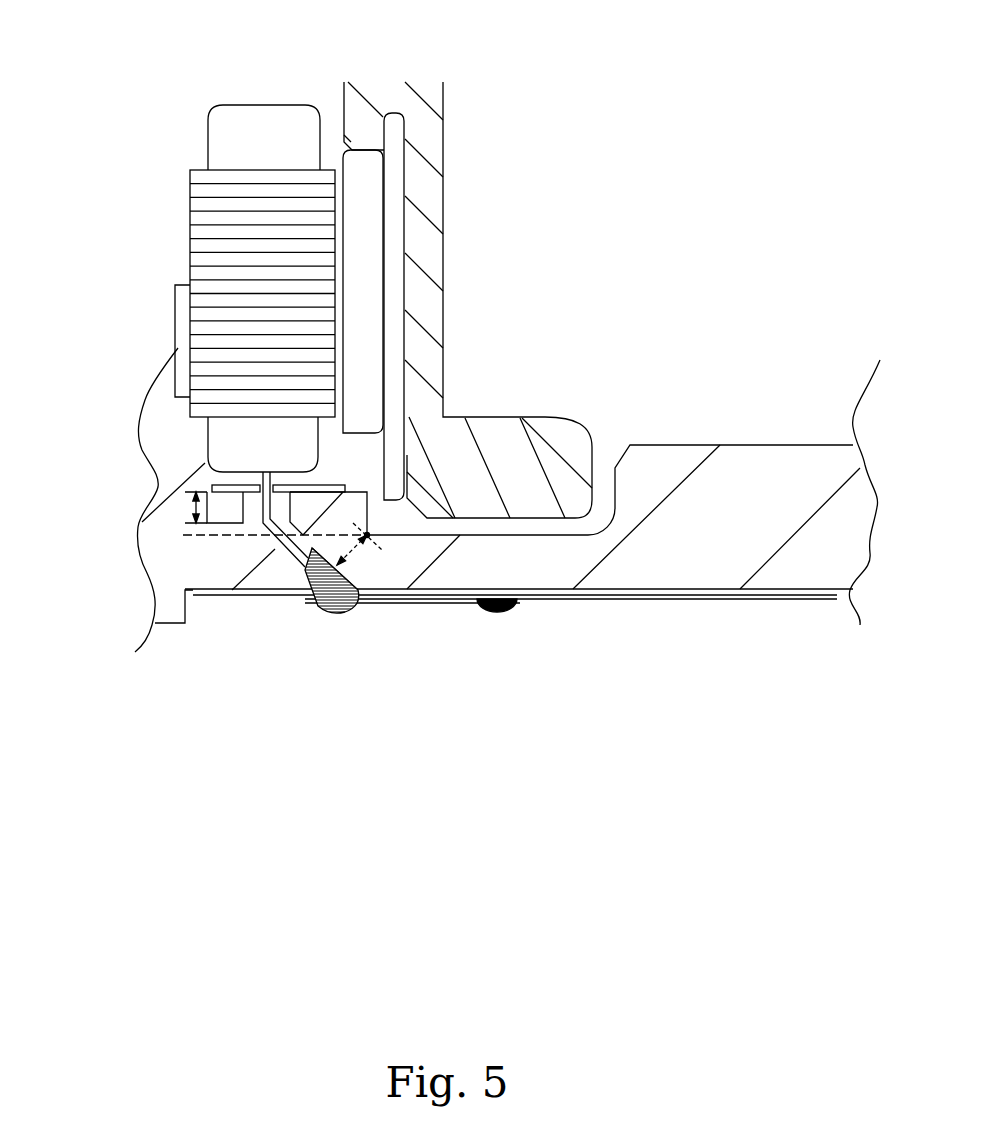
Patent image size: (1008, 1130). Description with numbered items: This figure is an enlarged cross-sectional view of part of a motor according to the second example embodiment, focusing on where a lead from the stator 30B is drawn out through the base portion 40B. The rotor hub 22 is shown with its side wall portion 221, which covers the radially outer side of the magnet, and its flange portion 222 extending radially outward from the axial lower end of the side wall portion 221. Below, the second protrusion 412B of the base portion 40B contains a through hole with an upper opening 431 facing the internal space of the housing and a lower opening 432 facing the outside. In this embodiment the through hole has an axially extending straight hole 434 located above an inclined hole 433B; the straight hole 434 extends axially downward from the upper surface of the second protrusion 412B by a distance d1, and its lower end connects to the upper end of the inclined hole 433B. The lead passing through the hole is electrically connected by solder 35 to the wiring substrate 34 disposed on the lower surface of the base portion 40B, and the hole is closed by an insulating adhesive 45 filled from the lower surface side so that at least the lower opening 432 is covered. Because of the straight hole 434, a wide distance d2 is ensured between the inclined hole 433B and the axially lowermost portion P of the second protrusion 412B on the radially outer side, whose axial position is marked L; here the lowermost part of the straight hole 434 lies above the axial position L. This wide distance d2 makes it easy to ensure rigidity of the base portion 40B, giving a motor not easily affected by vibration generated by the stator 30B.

The stator 30B is at (165, 186).
The rotor hub 22 is at (478, 300).
The side wall portion 221 is at (427, 303).
The flange portion 222 is at (497, 433).
The base portion 40B is at (733, 503).
The upper opening 431 is at (252, 496).
The lower opening 432 is at (358, 582).
The inclined hole 433B is at (258, 552).
The straight hole 434 is at (248, 552).
The second protrusion 412B is at (235, 593).
The adhesive 45 is at (330, 622).
The wiring substrate 34 is at (670, 598).
The solder 35 is at (503, 613).
The axial position L is at (170, 537).
The distance d1 is at (187, 508).
The distance d2 is at (360, 552).
The axially lowermost portion P is at (379, 522).